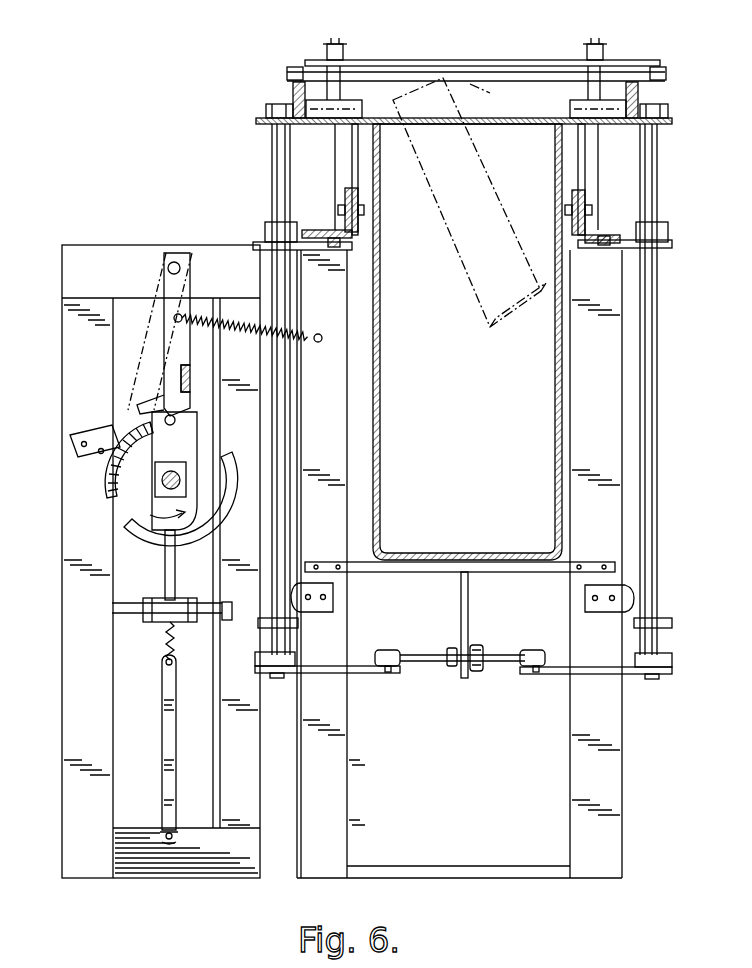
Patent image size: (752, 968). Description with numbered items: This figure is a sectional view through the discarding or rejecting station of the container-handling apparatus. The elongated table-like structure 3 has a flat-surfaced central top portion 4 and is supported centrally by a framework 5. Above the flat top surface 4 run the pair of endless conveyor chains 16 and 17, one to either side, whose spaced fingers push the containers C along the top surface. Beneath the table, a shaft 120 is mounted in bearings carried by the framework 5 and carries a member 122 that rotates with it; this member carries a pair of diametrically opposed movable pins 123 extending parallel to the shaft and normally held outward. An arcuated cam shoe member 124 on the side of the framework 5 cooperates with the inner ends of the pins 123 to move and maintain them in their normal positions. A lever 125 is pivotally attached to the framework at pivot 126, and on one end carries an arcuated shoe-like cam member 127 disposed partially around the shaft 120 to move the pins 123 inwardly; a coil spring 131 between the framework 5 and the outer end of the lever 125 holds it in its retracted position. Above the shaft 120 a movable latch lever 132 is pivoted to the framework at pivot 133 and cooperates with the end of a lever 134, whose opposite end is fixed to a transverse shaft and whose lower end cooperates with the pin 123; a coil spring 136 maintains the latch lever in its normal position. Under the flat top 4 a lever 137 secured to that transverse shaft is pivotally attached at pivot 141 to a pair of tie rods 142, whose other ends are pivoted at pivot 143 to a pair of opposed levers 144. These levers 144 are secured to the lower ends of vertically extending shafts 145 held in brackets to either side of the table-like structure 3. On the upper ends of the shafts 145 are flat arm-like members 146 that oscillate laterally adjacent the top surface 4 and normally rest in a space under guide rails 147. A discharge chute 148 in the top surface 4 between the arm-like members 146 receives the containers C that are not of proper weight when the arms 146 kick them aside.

The table-like structure 3 is at (352, 160).
The flat-surfaced central top portion 4 is at (532, 118).
The framework 5 is at (76, 258).
The endless conveyor chain 16 is at (597, 55).
The endless conveyor chain 17 is at (340, 55).
The shaft 120 is at (165, 484).
The member 122 is at (185, 438).
The movable pins 123 is at (176, 414).
The arcuated cam shoe member 124 is at (110, 476).
The lever 125 is at (167, 582).
The pivot 126 is at (112, 608).
The arcuated shoe-like cam member 127 is at (226, 520).
The coil spring 131 is at (178, 648).
The movable latch lever 132 is at (165, 340).
The pivot 133 is at (176, 258).
The lever 134 is at (182, 380).
The coil spring 136 is at (250, 340).
The lever 137 is at (460, 611).
The pivotal attachment 141 is at (478, 650).
The tie rods 142 is at (470, 672).
The pivotal attachment 143 is at (390, 672).
The opposed levers 144 is at (333, 676).
The vertically extending shafts 145 is at (284, 478).
The arm-like members 146 is at (282, 108).
The guide rails 147 is at (296, 88).
The discharge chute 148 is at (540, 452).
The containers C is at (360, 104).